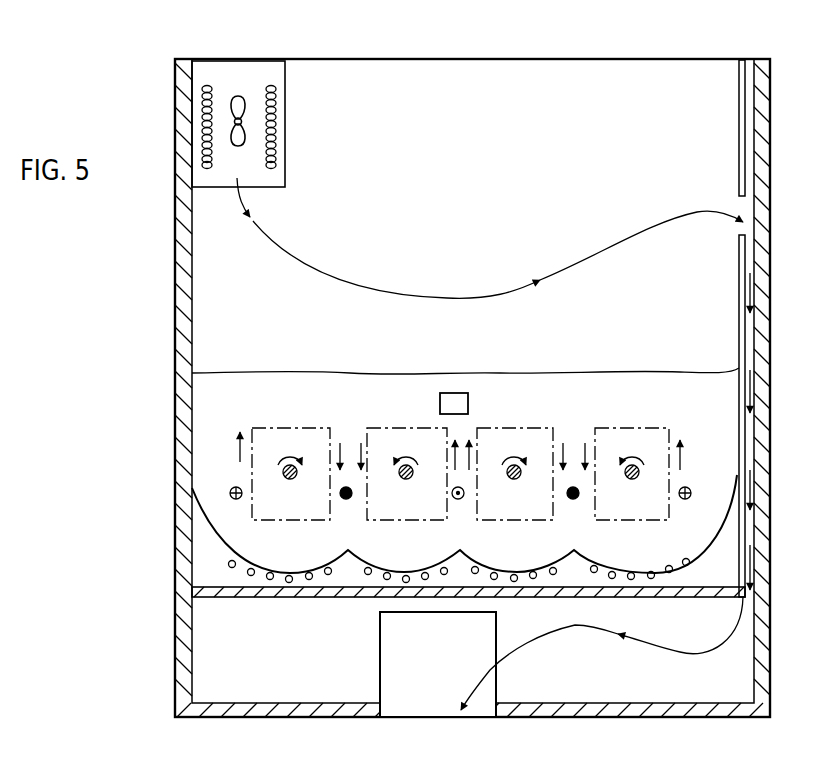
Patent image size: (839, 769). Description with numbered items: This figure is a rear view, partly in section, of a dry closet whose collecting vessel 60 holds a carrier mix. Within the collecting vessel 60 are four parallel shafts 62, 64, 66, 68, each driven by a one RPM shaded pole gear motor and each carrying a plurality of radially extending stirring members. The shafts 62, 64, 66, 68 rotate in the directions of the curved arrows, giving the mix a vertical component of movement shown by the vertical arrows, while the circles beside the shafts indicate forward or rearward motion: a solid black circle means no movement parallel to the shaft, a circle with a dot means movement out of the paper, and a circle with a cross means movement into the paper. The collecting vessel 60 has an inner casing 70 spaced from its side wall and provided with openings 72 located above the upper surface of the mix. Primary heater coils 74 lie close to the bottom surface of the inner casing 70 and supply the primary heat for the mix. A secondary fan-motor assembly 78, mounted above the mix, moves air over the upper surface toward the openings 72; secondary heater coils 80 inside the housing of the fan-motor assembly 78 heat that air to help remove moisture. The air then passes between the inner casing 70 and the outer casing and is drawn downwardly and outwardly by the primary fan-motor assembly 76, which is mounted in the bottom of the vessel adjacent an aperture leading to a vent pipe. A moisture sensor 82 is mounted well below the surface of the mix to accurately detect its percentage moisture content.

The collecting vessel 60 is at (770, 168).
The shaft 62 is at (298, 478).
The shaft 64 is at (414, 478).
The shaft 66 is at (522, 478).
The shaft 68 is at (640, 478).
The inner casing 70 is at (739, 148).
The openings 72 is at (745, 200).
The primary heater coils 74 is at (251, 576).
The primary fan-motor assembly 76 is at (394, 641).
The secondary fan-motor assembly 78 is at (238, 96).
The secondary heater coils 80 is at (272, 87).
The moisture sensor 82 is at (456, 392).